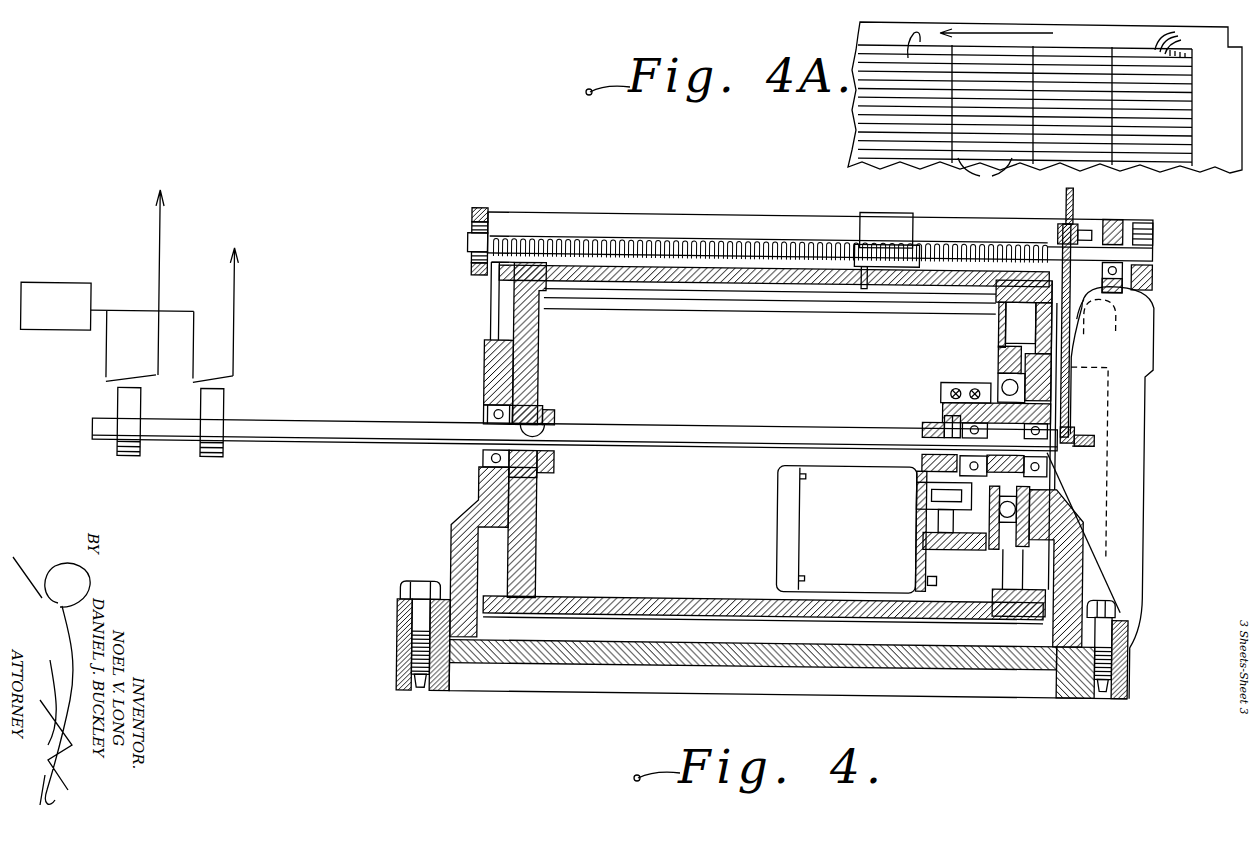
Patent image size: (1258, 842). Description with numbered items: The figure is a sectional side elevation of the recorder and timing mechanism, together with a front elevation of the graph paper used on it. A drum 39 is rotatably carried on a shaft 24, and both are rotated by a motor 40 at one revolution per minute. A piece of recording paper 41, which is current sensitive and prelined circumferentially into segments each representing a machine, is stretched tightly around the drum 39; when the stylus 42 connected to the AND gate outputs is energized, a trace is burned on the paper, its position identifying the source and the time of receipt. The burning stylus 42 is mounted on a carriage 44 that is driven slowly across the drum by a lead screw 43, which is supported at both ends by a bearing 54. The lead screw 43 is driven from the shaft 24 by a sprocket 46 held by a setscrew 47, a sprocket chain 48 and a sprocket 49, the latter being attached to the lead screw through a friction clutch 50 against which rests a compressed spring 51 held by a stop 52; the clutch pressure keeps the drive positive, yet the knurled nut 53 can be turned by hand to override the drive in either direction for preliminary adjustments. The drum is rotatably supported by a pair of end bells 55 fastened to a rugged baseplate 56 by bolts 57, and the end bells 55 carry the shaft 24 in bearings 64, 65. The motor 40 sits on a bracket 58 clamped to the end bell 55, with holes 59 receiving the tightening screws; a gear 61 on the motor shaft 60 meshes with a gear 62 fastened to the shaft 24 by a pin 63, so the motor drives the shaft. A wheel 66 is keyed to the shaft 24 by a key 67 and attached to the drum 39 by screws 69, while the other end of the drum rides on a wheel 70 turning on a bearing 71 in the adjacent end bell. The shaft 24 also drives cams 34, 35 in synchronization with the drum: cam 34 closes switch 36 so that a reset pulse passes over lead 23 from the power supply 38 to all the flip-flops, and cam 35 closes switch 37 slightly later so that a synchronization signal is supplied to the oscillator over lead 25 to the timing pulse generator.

In FIG. 4, the lead 23 is at (160, 268).
In FIG. 4, the shaft 24 is at (672, 446).
In FIG. 4, the timing pulse generator line 25 is at (237, 283).
In FIG. 4, the cam 34 is at (130, 398).
In FIG. 4, the cam 35 is at (220, 400).
In FIG. 4, the switch 36 is at (140, 377).
In FIG. 4, the switch 37 is at (222, 380).
In FIG. 4, the power supply 38 is at (72, 288).
In FIG. 4, the drum 39 is at (596, 612).
In FIG. 4, the motor 40 is at (775, 522).
In FIG. 4, the recording paper 41 is at (722, 262).
In FIG. 4A, the recording paper 41 is at (1210, 158).
In FIG. 4, the stylus 42 is at (858, 290).
In FIG. 4, the lead screw 43 is at (773, 237).
In FIG. 4, the carriage 44 is at (888, 212).
In FIG. 4, the sprocket 46 is at (1077, 431).
In FIG. 4, the setscrew 47 is at (1092, 439).
In FIG. 4, the sprocket chain 48 is at (1071, 382).
In FIG. 4, the sprocket 49 is at (1073, 205).
In FIG. 4, the friction clutch 50 is at (1078, 221).
In FIG. 4, the compressed spring 51 is at (1118, 294).
In FIG. 4, the stop 52 is at (1124, 282).
In FIG. 4, the knurled nut 53 is at (1153, 234).
In FIG. 4, the bearing 54 is at (488, 210).
In FIG. 4, the end bell 55 is at (520, 582).
In FIG. 4, the baseplate 56 is at (660, 664).
In FIG. 4, the bolt 57 is at (412, 587).
In FIG. 4, the bracket 58 is at (940, 573).
In FIG. 4, the hole 59 is at (945, 386).
In FIG. 4, the motor shaft 60 is at (925, 487).
In FIG. 4, the gear 61 is at (926, 532).
In FIG. 4, the gear 62 is at (946, 413).
In FIG. 4, the pin 63 is at (925, 425).
In FIG. 4, the bearing 64 is at (543, 406).
In FIG. 4, the bearing 65 is at (1058, 464).
In FIG. 4, the wheel 66 is at (552, 352).
In FIG. 4, the key 67 is at (549, 432).
In FIG. 4, the screw 69 is at (1015, 270).
In FIG. 4, the wheel 70 is at (1005, 378).
In FIG. 4, the bearing 71 is at (992, 412).